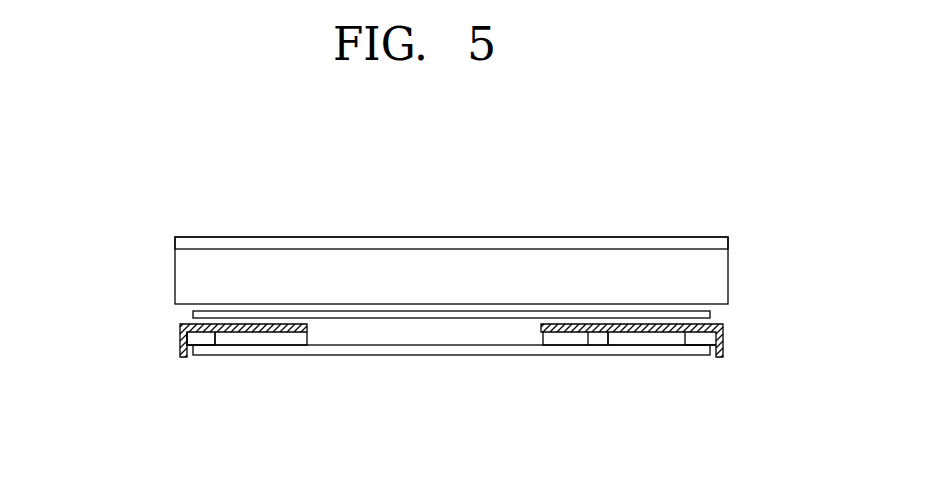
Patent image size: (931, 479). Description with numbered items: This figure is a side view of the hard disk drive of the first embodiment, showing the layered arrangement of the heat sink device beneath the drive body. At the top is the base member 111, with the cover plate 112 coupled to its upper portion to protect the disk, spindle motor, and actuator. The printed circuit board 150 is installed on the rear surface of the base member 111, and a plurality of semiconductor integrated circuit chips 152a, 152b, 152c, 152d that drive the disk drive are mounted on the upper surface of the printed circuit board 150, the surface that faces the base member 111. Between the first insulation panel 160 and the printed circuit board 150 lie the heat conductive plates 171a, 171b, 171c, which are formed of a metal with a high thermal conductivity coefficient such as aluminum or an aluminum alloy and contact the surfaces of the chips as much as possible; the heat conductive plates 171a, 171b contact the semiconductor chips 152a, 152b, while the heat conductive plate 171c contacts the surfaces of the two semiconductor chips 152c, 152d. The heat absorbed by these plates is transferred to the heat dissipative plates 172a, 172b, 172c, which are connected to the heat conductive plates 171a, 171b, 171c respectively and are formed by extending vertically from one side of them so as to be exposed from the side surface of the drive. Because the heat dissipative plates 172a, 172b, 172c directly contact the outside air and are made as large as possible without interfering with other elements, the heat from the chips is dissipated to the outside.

The base member 111 is at (713, 278).
The cover plate 112 is at (728, 242).
The first insulation panel 160 is at (710, 316).
The printed circuit board 150 is at (440, 349).
The heat dissipative plate 172a is at (161, 340).
The heat dissipative plate 172b is at (180, 341).
The heat dissipative plate 172c is at (723, 342).
The semiconductor chip 152a is at (253, 376).
The semiconductor chip 152b is at (261, 337).
The semiconductor chip 152c is at (648, 337).
The semiconductor chip 152d is at (563, 337).
The heat conductive plate 171a is at (164, 391).
The heat conductive plate 171b is at (206, 333).
The heat conductive plate 171c is at (677, 330).